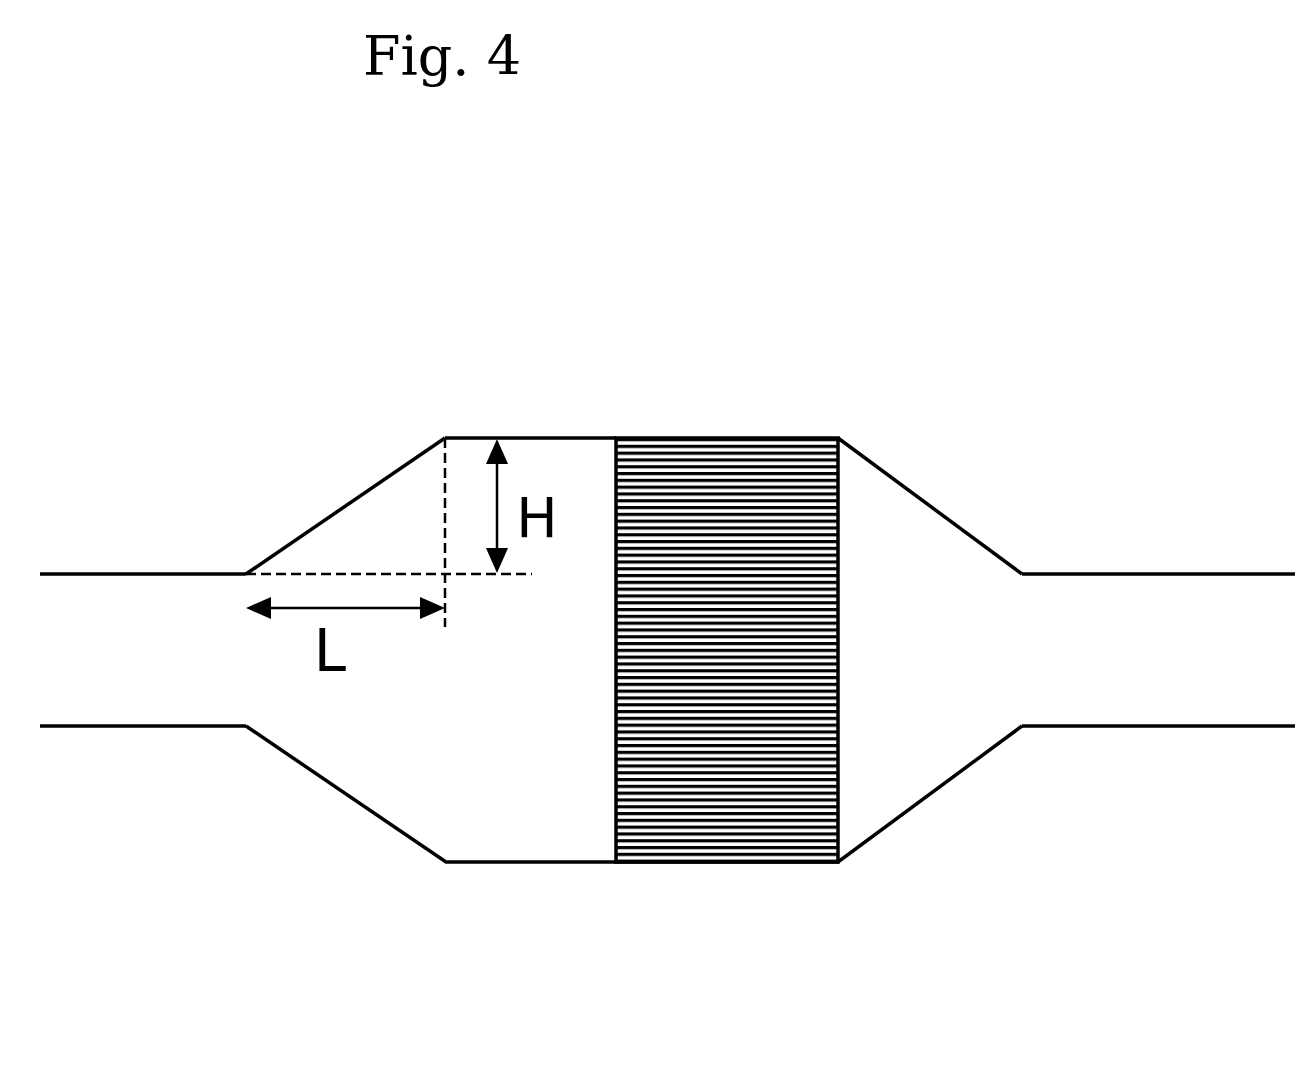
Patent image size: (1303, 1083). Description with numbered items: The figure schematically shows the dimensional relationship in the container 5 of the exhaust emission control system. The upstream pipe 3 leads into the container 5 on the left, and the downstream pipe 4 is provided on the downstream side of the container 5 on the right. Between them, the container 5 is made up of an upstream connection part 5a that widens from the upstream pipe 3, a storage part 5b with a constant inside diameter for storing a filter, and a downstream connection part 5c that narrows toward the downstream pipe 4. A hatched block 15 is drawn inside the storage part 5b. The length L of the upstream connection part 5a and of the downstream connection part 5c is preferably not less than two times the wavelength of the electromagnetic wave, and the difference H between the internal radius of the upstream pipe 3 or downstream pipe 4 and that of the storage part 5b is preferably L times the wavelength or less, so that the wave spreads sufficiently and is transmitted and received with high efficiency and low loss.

The upstream pipe 3 is at (120, 573).
The downstream pipe 4 is at (1202, 574).
The container 5 is at (872, 455).
The upstream connection part 5a is at (350, 500).
The storage part 5b is at (547, 437).
The downstream connection part 5c is at (983, 543).
The catalyst carrier 15 is at (733, 467).